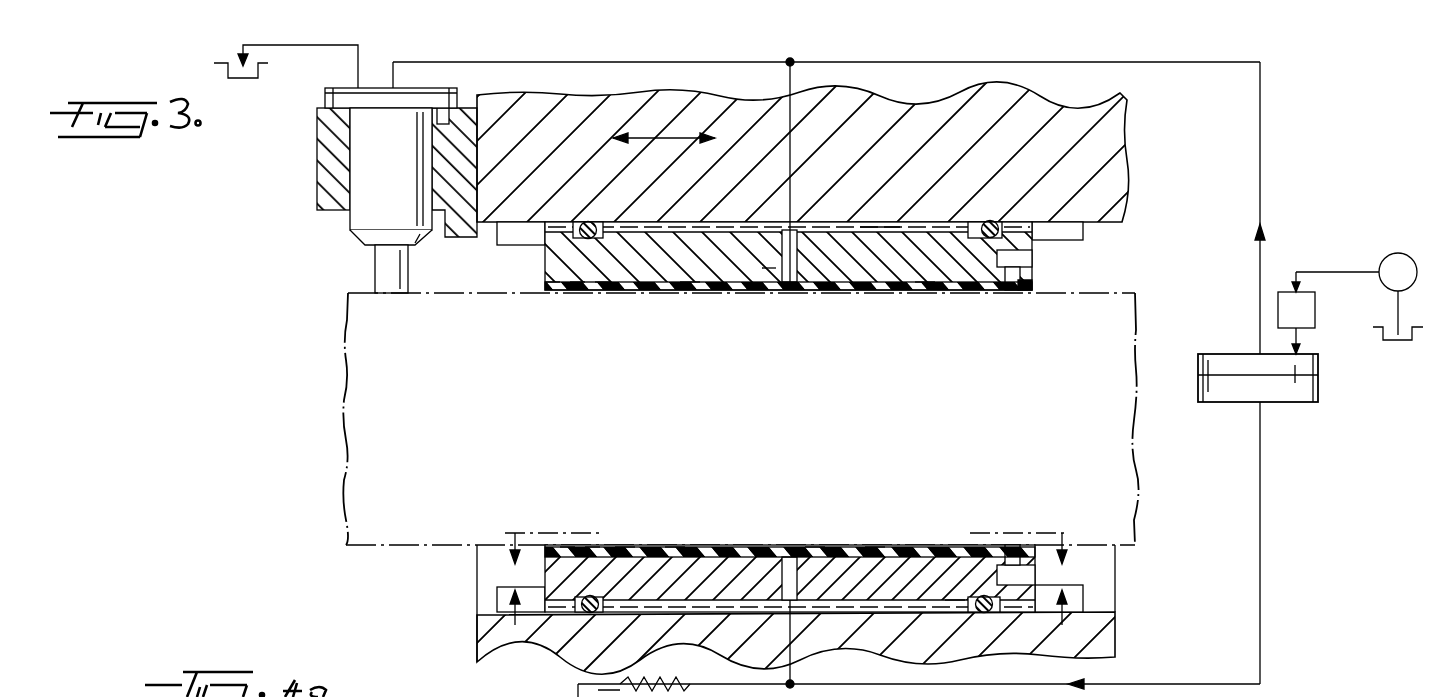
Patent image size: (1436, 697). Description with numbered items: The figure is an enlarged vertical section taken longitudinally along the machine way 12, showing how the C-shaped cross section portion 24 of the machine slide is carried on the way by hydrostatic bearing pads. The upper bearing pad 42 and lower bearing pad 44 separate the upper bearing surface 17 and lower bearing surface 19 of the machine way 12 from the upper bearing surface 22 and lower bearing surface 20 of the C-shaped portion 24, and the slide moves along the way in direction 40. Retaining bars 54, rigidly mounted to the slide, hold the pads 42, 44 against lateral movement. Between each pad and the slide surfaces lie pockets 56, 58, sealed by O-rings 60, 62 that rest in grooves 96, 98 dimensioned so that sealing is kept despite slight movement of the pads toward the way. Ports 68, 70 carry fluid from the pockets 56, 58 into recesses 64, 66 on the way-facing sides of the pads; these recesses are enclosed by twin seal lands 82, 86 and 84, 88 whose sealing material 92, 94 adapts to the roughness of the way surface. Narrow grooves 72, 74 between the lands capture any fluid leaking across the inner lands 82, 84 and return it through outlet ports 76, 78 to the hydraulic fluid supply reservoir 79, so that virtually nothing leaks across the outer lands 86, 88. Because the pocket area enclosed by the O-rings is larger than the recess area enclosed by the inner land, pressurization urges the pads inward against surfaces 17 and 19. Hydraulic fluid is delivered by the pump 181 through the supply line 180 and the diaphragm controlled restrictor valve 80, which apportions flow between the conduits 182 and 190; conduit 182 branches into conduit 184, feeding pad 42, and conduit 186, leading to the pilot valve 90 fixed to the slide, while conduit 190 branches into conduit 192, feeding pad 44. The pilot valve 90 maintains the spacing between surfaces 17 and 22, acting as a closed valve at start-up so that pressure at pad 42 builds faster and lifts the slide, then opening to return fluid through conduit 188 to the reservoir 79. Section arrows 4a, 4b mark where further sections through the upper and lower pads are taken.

The machine way 12 is at (784, 425).
The upper bearing surface 17 is at (838, 290).
The lower bearing surface 19 is at (790, 545).
The lower bearing surface 20 is at (733, 608).
The upper bearing surface 22 is at (682, 222).
The C-shaped cross section portion 24 is at (838, 171).
The direction 40 is at (673, 109).
The bearing pad 42 is at (767, 272).
The bearing pad 44 is at (768, 560).
The retaining bars 54 is at (502, 240).
The pocket 56 is at (874, 227).
The pocket 58 is at (670, 608).
The O-ring 60 is at (992, 222).
The O-ring 62 is at (982, 608).
The recess 64 is at (690, 290).
The recess 66 is at (670, 546).
The port 68 is at (800, 290).
The port 70 is at (814, 546).
The narrow groove 72 is at (576, 290).
The narrow groove 74 is at (588, 546).
The outlet port 76 is at (1032, 259).
The outlet port 78 is at (1035, 570).
The hydraulic fluid supply reservoir 79 is at (248, 76).
The diaphragm controlled restrictor valve 80 is at (1226, 364).
The land 82 is at (600, 290).
The land 84 is at (622, 546).
The land 86 is at (549, 290).
The land 88 is at (568, 546).
The pilot valve 90 is at (396, 177).
The sealing material 92 is at (923, 290).
The sealing material 94 is at (880, 530).
The groove 96 is at (975, 228).
The groove 98 is at (959, 606).
The hydraulic fluid supply line 180 is at (1340, 254).
The pump 181 is at (1400, 253).
The conduit 182 is at (1146, 62).
The conduit 184 is at (794, 74).
The conduit 186 is at (560, 61).
The conduit 188 is at (290, 48).
The conduit 190 is at (1260, 508).
The conduit 192 is at (788, 666).
The section line 4a is at (790, 533).
The section line 4b is at (790, 620).